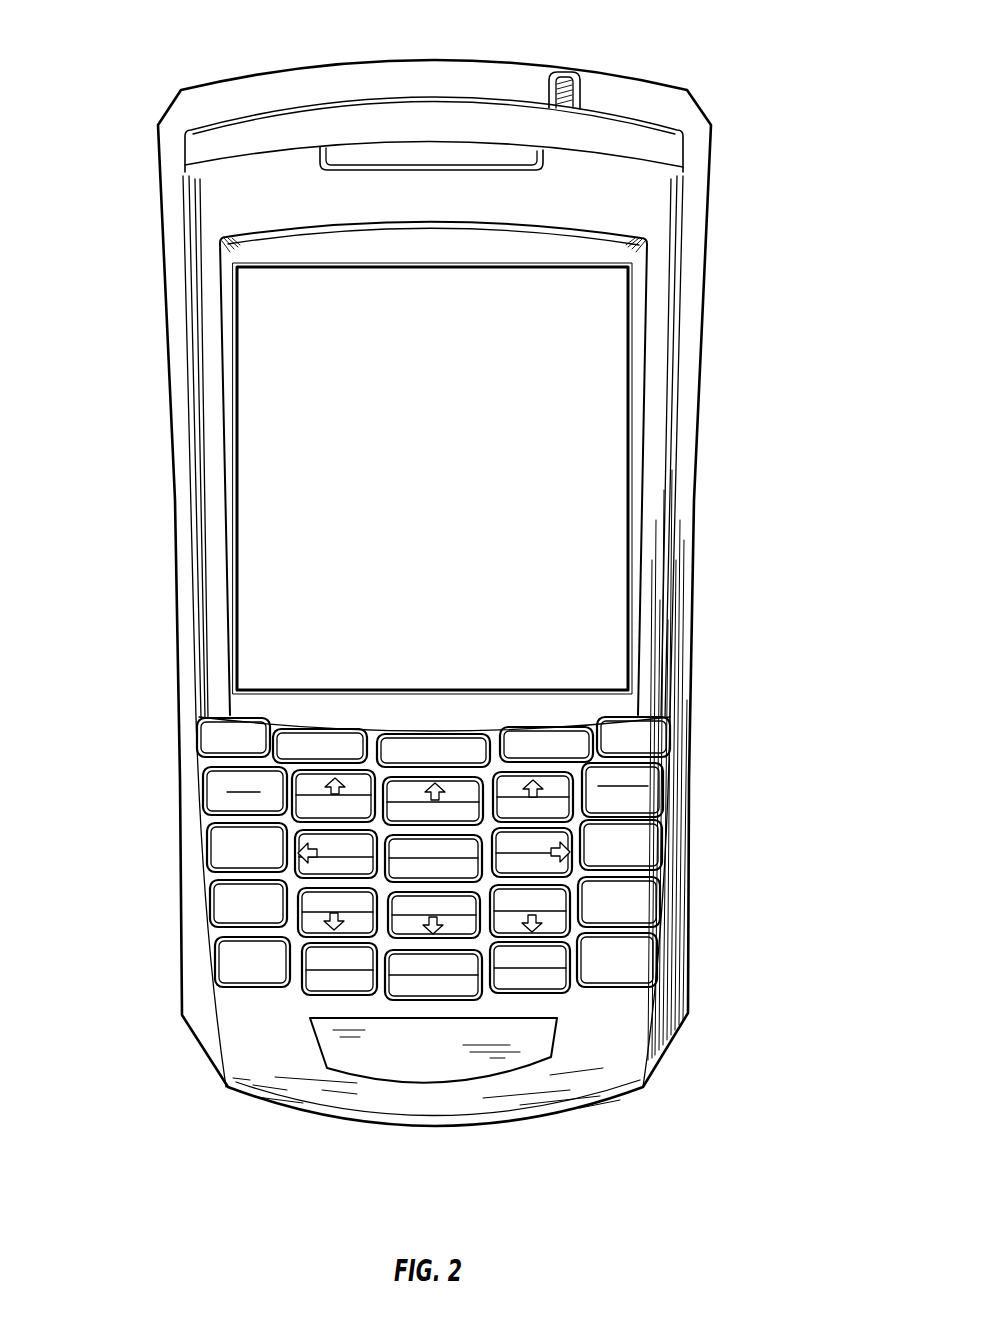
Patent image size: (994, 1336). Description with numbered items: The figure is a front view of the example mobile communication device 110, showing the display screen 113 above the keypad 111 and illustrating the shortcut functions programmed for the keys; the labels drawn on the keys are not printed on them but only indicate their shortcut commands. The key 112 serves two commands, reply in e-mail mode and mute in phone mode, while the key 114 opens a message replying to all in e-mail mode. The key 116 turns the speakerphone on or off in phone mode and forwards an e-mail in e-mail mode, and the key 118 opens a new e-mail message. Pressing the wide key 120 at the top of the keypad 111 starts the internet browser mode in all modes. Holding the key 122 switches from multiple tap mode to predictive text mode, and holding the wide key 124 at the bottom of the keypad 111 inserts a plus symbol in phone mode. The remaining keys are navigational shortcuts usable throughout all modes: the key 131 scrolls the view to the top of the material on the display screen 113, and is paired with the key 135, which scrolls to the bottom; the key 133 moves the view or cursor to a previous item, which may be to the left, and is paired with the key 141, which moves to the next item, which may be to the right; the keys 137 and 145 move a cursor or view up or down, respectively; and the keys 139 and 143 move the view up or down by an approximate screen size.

The mobile communication device 110 is at (516, 35).
The keypad 111 is at (590, 1007).
The display screen 113 is at (573, 487).
The reply/mute key 112 is at (205, 787).
The reply-to-all key 114 is at (217, 848).
The forward/speakerphone key 116 is at (655, 783).
The compose key 118 is at (652, 838).
The wide browser key 120 is at (395, 748).
The multi-tap/predictive text switching key 122 is at (310, 990).
The wide insert key 124 is at (410, 987).
The top key 131 is at (308, 783).
The previous item key 133 is at (297, 868).
The bottom key 135 is at (310, 903).
The item up key 137 is at (470, 785).
The page up key 139 is at (560, 787).
The next item key 141 is at (567, 867).
The page down key 143 is at (507, 928).
The item down key 145 is at (457, 928).